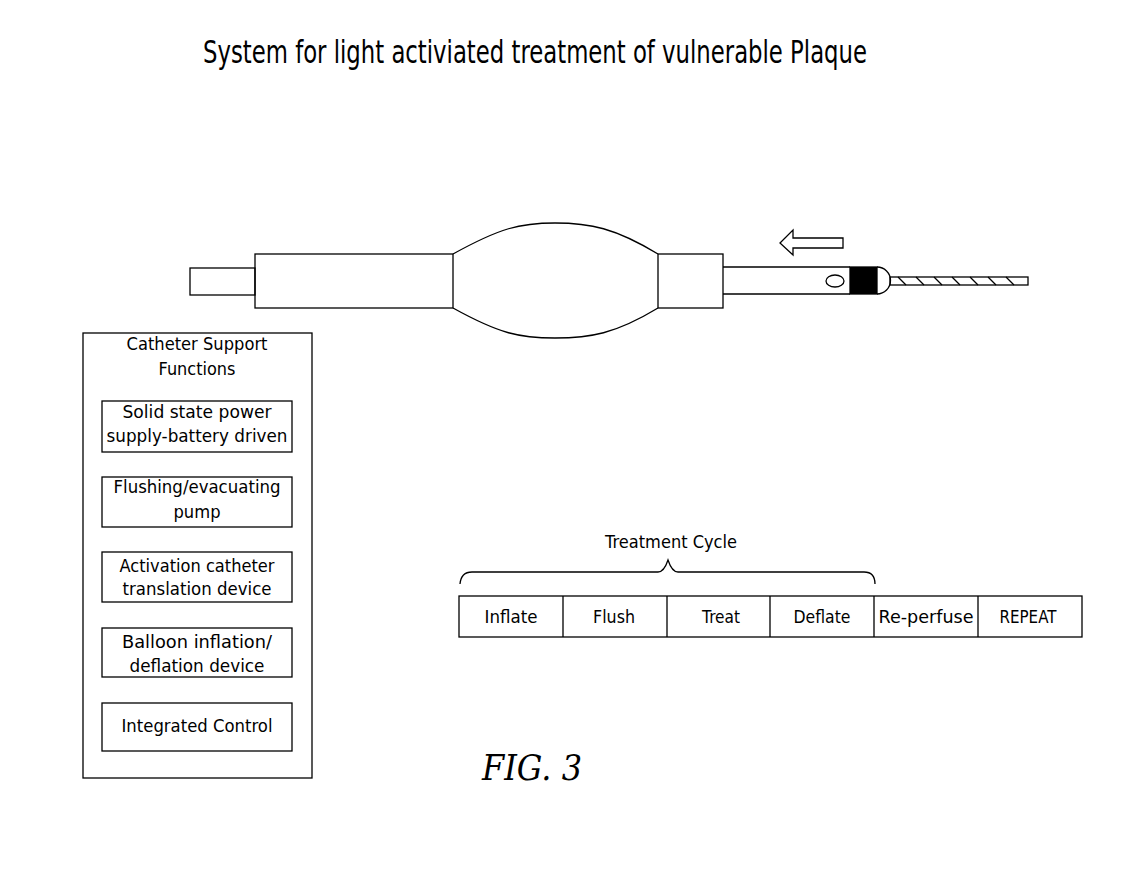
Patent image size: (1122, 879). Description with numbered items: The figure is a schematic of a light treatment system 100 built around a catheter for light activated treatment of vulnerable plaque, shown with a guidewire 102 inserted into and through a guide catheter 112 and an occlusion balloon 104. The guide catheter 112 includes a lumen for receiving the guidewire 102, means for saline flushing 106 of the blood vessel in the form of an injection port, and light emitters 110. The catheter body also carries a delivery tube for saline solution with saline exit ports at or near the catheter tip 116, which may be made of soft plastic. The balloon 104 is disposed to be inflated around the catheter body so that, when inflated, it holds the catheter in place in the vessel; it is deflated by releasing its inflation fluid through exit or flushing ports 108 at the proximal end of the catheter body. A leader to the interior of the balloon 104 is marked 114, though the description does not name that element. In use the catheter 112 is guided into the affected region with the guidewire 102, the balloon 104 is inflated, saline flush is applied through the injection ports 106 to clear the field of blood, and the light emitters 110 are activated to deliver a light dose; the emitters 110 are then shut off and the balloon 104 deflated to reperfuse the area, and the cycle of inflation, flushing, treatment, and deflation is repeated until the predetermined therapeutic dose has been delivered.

The light treatment system 100 is at (191, 154).
The guidewire 102 is at (975, 278).
The occlusion balloon 104 is at (558, 223).
The means for saline flushing 106 is at (835, 287).
The exit or flushing ports 108 is at (724, 304).
The light emitters 110 is at (865, 295).
The guide catheter 112 is at (358, 254).
The light emitting region 114 is at (537, 267).
The catheter tip 116 is at (888, 270).